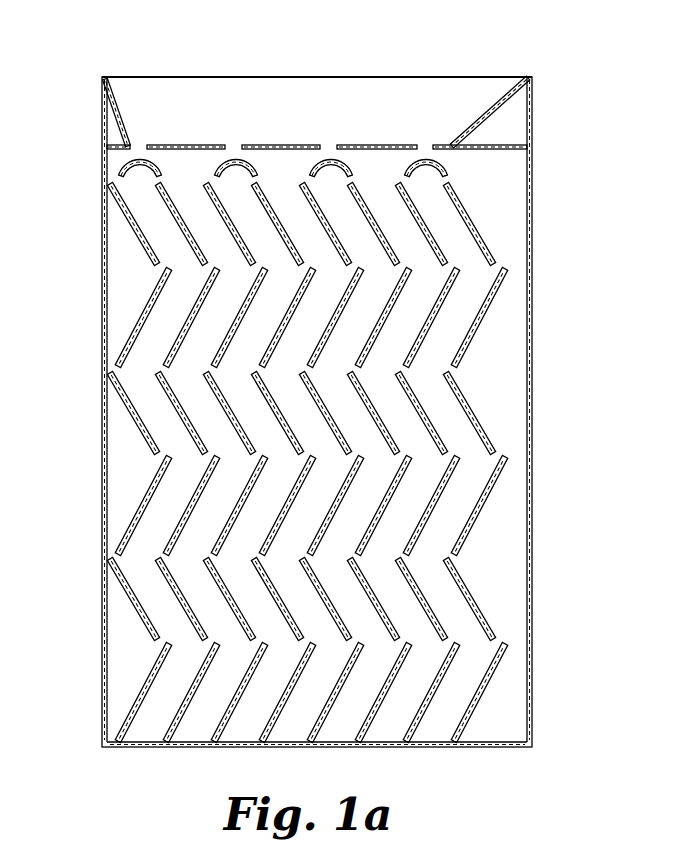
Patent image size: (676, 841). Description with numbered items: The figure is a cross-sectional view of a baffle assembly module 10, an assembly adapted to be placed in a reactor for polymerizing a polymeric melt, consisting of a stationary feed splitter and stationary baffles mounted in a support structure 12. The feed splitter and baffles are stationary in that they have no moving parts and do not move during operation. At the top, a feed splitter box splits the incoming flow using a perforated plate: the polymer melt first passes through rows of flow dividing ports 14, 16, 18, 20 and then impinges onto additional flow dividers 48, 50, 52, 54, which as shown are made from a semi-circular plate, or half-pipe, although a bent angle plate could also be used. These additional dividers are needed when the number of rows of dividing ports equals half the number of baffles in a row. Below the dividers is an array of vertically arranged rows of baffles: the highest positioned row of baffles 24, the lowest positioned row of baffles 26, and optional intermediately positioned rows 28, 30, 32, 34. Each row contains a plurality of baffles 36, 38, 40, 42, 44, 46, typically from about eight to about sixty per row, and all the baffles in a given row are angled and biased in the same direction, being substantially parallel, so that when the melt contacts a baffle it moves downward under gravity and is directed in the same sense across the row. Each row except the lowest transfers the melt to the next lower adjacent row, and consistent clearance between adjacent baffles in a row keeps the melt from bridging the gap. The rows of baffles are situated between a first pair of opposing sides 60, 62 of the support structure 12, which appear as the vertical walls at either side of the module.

The baffle assembly module 10 is at (494, 36).
The support structure 12 is at (532, 222).
The flow dividing port 14 is at (137, 147).
The flow dividing port 16 is at (235, 147).
The flow dividing port 18 is at (329, 147).
The flow dividing port 20 is at (424, 147).
The row of baffles 24 is at (135, 223).
The row of baffles 26 is at (145, 690).
The intermediately positioned row 28 is at (145, 316).
The intermediately positioned row 30 is at (132, 407).
The intermediately positioned row 32 is at (145, 500).
The intermediately positioned row 34 is at (132, 597).
The baffle 36 is at (147, 240).
The baffle 38 is at (157, 292).
The baffle 40 is at (145, 430).
The baffle 42 is at (157, 481).
The baffle 44 is at (147, 616).
The baffle 46 is at (157, 667).
The flow divider 48 is at (128, 145).
The flow divider 50 is at (218, 165).
The flow divider 52 is at (313, 165).
The flow divider 54 is at (408, 165).
The opposing side 60 is at (532, 297).
The opposing side 62 is at (104, 268).